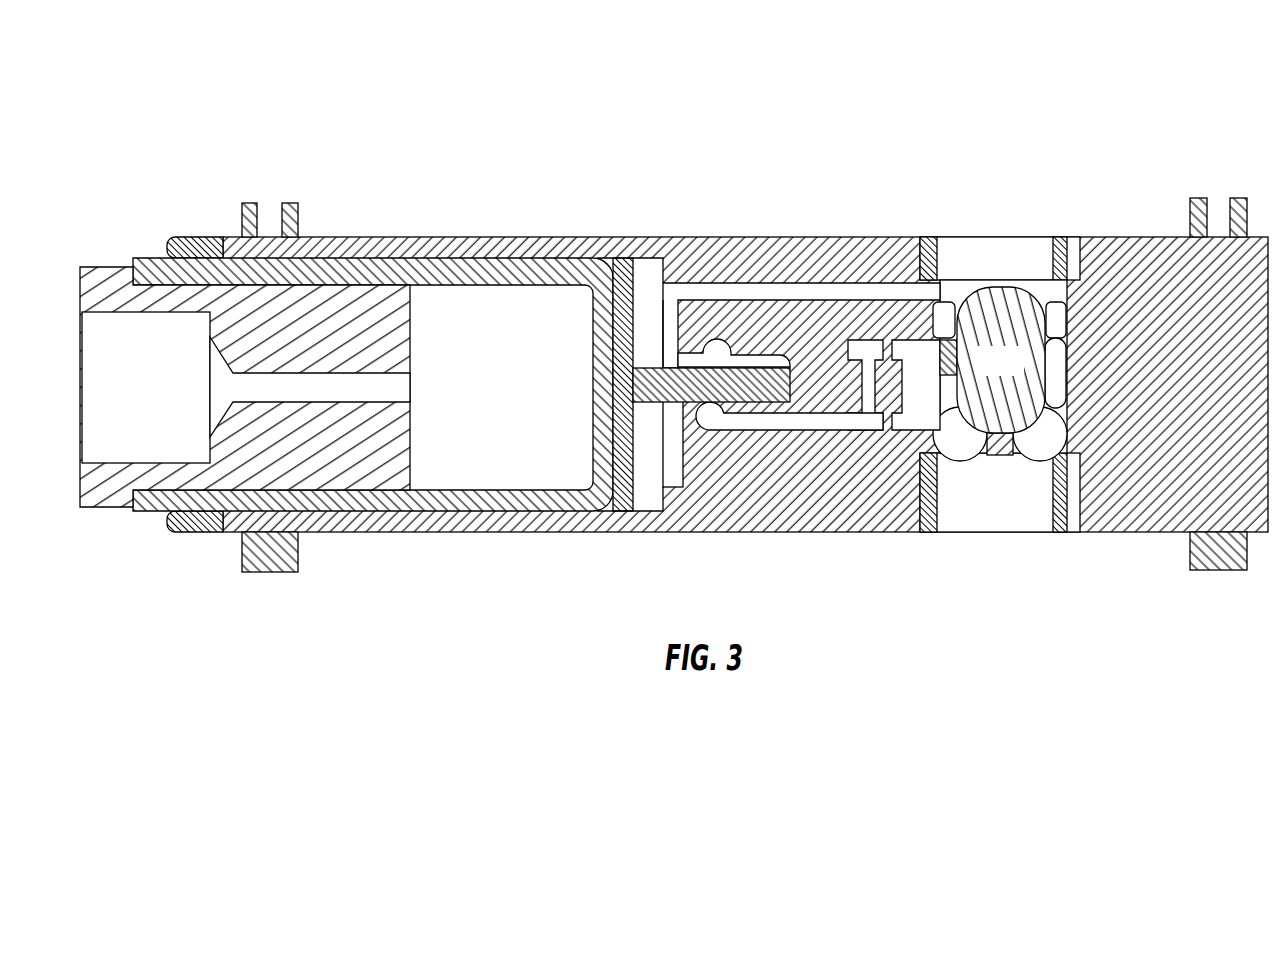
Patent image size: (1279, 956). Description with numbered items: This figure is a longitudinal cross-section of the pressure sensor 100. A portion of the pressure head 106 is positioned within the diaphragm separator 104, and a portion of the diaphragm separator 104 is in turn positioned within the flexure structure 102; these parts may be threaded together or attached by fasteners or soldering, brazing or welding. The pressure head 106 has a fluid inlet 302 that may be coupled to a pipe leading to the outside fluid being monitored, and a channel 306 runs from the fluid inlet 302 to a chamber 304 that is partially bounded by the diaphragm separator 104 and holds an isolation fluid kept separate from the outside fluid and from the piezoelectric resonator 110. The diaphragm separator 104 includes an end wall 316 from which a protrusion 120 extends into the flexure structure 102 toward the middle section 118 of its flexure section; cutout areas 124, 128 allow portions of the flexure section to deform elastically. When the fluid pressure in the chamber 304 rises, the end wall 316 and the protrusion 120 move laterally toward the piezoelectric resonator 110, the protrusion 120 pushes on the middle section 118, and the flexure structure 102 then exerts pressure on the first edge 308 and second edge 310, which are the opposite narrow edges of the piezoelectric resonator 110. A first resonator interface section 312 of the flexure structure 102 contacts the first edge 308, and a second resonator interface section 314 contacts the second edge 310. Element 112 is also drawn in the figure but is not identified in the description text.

The pressure sensor 100 is at (674, 332).
The flexure structure 102 is at (577, 237).
The diaphragm separator 104 is at (495, 272).
The pressure head 106 is at (330, 312).
The piezoelectric resonator 110 is at (980, 376).
The valve pin 112 is at (945, 366).
The middle section 118 is at (820, 395).
The protrusion 120 is at (697, 400).
The cutout area 124 is at (783, 290).
The cutout area 128 is at (683, 352).
The fluid inlet 302 is at (115, 401).
The chamber 304 is at (465, 386).
The channel 306 is at (313, 393).
The first edge 308 is at (897, 433).
The second edge 310 is at (1065, 367).
The first resonator interface section 312 is at (948, 327).
The second resonator interface section 314 is at (1062, 320).
The end wall 316 is at (628, 383).